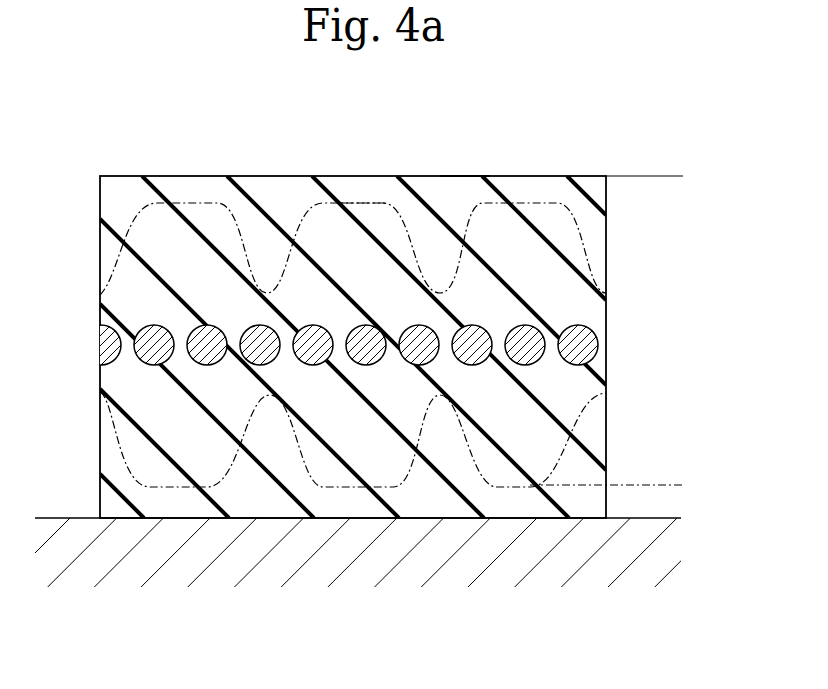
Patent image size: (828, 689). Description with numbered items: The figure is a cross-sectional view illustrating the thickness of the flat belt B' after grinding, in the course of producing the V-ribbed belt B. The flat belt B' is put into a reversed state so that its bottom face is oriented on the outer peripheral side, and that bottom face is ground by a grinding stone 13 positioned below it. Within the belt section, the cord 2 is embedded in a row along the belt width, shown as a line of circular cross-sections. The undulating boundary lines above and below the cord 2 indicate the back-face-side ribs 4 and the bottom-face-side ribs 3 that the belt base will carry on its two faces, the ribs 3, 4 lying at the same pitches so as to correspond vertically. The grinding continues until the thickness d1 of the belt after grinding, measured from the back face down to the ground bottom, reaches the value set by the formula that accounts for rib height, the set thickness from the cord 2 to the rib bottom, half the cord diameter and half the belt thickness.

The cord 2 is at (325, 331).
The bottom-face-side rib 3 is at (128, 448).
The back-face-side rib 4 is at (220, 203).
The grinding stone 13 is at (662, 518).
The V-ribbed belt B is at (362, 153).
The flat belt B' is at (465, 128).
The thickness of the belt after ground d1 is at (673, 176).